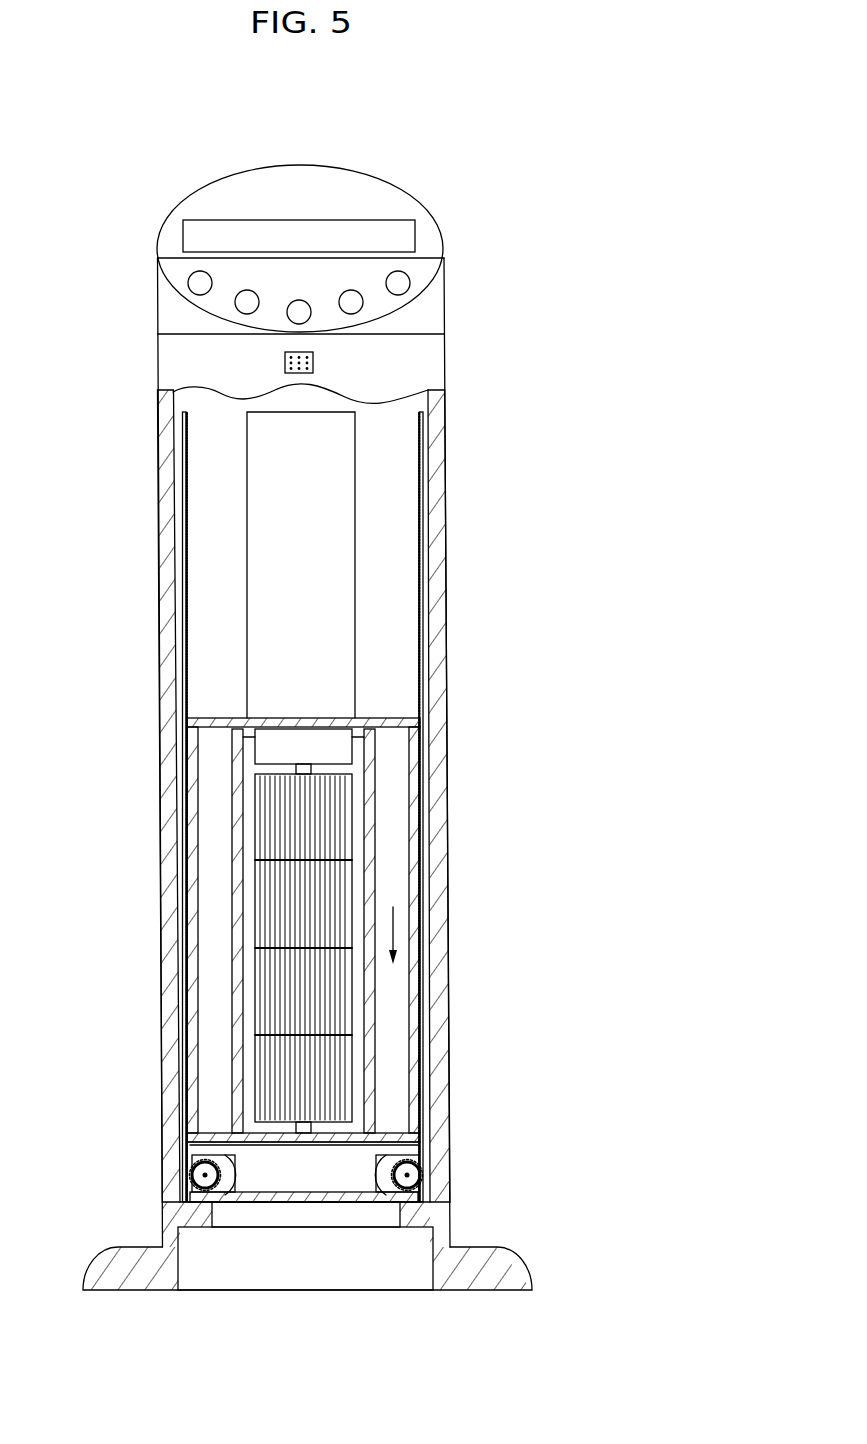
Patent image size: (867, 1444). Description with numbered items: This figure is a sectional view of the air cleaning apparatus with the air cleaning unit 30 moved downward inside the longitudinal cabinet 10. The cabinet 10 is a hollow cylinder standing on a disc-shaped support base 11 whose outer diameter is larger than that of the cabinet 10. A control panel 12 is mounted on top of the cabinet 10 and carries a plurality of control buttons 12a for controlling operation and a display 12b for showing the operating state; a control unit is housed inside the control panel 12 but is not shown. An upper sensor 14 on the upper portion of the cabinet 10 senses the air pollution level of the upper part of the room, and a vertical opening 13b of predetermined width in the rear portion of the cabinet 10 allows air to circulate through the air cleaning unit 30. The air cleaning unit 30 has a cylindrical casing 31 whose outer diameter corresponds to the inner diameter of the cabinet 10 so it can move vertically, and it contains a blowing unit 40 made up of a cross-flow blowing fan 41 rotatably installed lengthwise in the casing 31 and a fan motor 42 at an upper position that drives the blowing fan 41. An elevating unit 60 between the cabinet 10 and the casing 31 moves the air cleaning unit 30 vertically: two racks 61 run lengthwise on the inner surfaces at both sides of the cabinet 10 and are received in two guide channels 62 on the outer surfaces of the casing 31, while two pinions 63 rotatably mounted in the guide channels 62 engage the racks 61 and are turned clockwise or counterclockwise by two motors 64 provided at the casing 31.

The longitudinal cabinet 10 is at (160, 421).
The support base 11 is at (508, 1260).
The control panel 12 is at (436, 226).
The control buttons 12a is at (188, 283).
The display 12b is at (195, 220).
The vertical opening 13b is at (354, 537).
The upper sensor 14 is at (285, 360).
The air cleaning unit 30 is at (166, 838).
The casing 31 is at (426, 987).
The blowing unit 40 is at (283, 710).
The cross-flow blowing fan 41 is at (340, 845).
The fan motor 42 is at (333, 737).
The elevating unit 60 is at (172, 1178).
The racks 61 is at (183, 470).
The guide channels 62 is at (185, 747).
The pinions 63 is at (192, 1166).
The motors 64 is at (238, 1172).